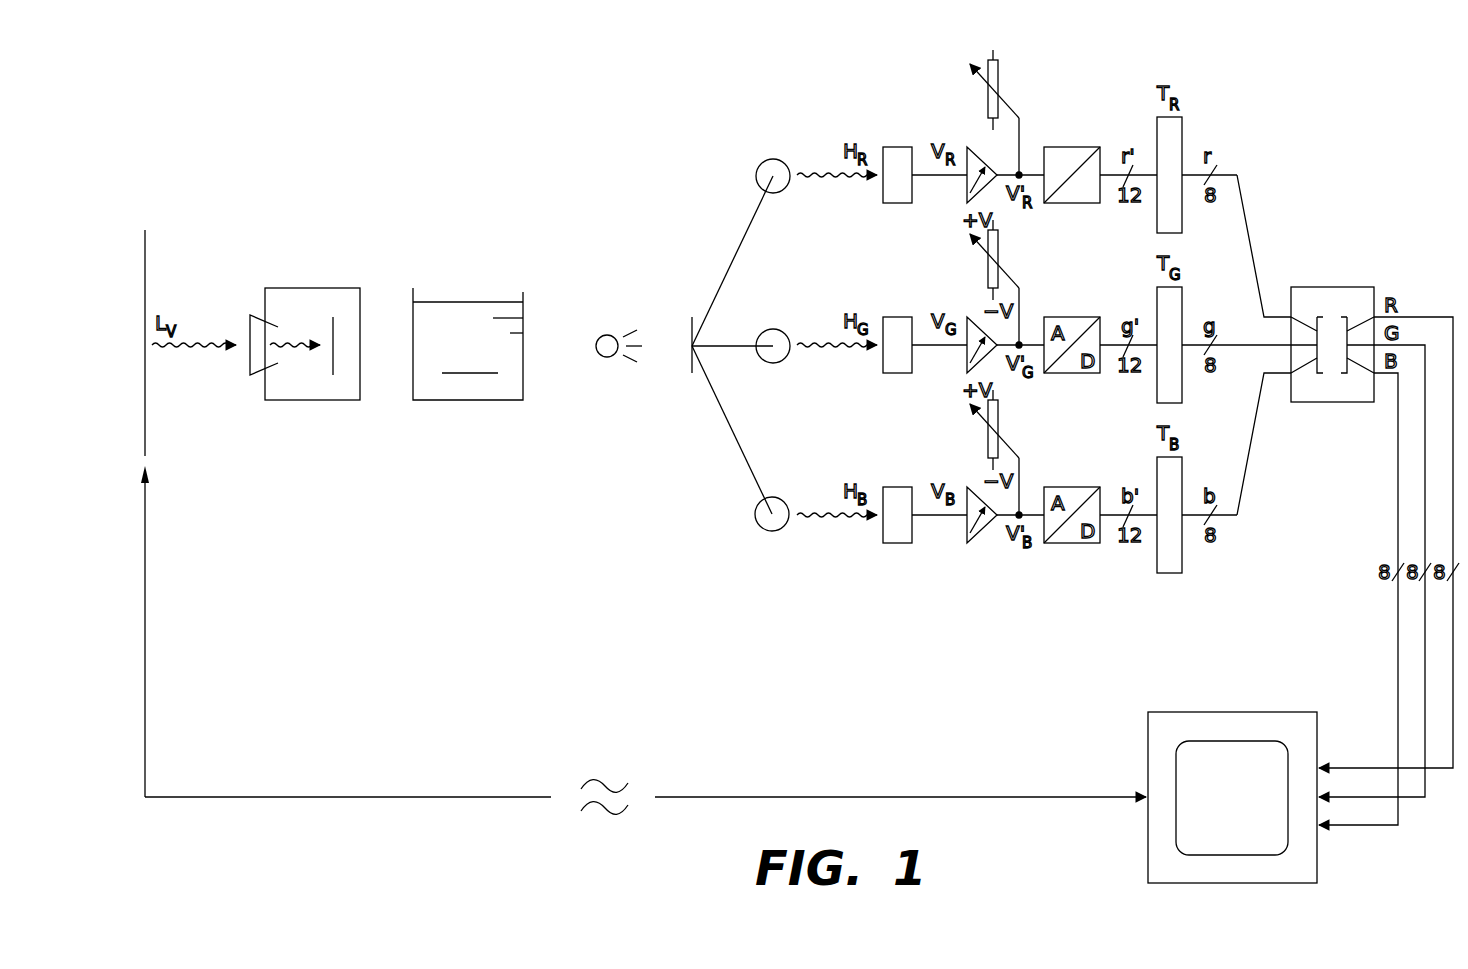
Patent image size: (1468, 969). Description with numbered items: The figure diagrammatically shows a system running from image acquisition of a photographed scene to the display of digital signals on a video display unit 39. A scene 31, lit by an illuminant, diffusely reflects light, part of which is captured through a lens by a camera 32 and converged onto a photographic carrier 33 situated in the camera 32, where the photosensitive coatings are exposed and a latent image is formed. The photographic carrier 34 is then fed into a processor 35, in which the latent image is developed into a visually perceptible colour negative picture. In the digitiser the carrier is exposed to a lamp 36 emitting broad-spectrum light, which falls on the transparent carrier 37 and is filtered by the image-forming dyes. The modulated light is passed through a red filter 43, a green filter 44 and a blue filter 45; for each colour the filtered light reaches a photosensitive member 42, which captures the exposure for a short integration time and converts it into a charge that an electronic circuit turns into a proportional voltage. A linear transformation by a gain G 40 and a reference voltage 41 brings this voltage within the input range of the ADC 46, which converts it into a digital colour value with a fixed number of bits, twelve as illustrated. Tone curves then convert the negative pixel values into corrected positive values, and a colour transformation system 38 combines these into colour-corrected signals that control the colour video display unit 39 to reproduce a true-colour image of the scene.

The scene 31 is at (145, 262).
The camera 32 is at (335, 296).
The photographic carrier 33 is at (333, 363).
The photographic carrier 34 is at (458, 371).
The processor 35 is at (523, 292).
The lamp 36 is at (612, 337).
The transparent carrier 37 is at (692, 363).
The colour transformation system 38 is at (1342, 293).
The video display unit 39 is at (1252, 717).
The gain G 40 is at (970, 193).
The reference voltage V_0 41 is at (997, 72).
The photosensitive member 42 is at (902, 148).
The red filter 43 is at (775, 168).
The green filter 44 is at (777, 332).
The blue filter 45 is at (775, 502).
The ADC 46 is at (1083, 148).